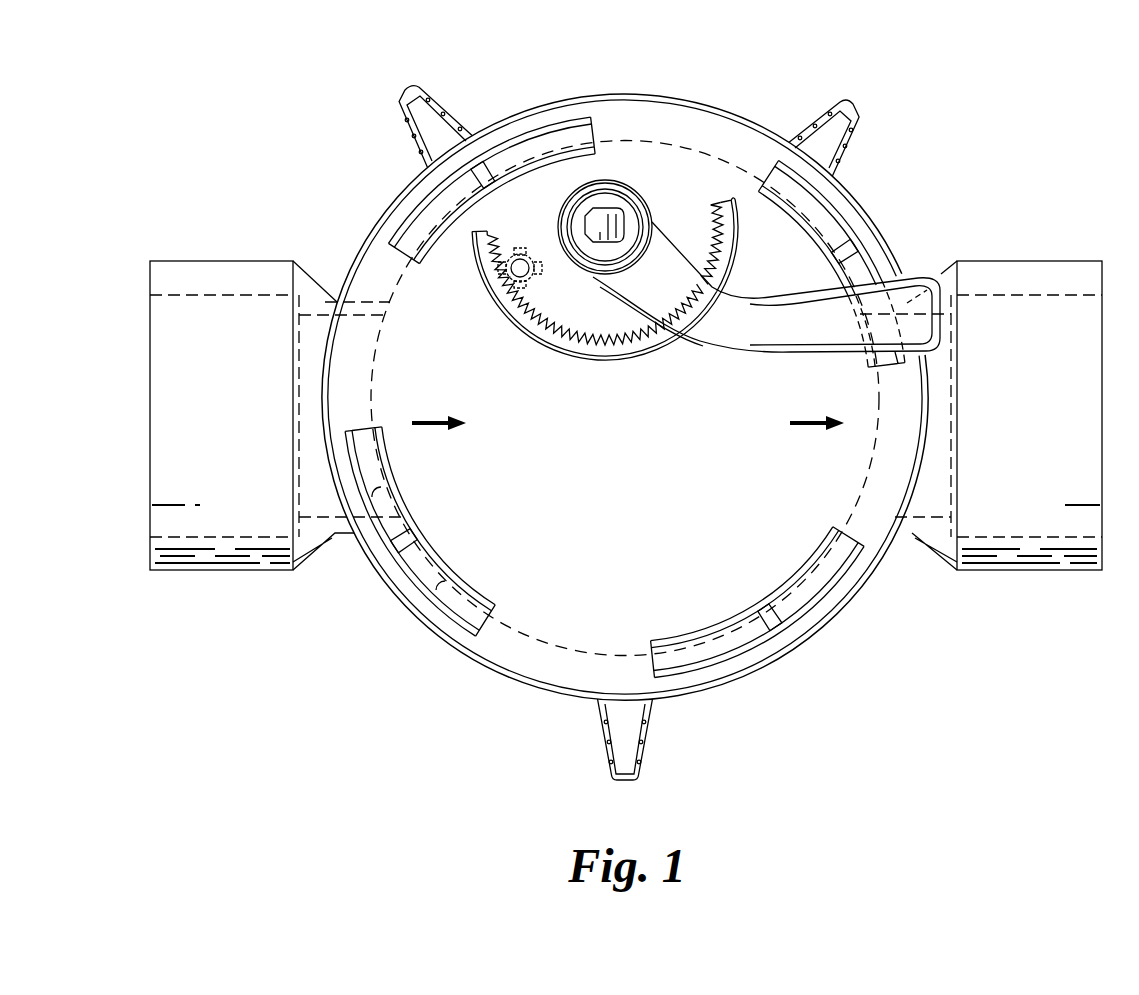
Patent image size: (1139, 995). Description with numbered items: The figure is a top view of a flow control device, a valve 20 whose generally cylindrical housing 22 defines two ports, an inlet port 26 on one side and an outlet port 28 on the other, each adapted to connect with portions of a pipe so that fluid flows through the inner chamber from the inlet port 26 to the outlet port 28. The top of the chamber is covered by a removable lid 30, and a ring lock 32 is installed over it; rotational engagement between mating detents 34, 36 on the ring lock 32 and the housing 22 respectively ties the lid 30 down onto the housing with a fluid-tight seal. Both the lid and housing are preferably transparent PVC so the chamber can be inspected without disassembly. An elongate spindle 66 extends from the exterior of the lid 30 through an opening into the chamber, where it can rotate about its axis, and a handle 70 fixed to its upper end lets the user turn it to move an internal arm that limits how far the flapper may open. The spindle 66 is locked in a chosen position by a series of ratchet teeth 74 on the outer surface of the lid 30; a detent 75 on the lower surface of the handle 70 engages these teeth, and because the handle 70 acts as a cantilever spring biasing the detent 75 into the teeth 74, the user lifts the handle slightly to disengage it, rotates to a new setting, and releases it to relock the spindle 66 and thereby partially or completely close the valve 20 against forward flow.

The valve 20 is at (746, 86).
The housing 22 is at (849, 192).
The inlet port 26 is at (214, 262).
The outlet port 28 is at (1020, 262).
The removable lid 30 is at (545, 470).
The ring lock 32 is at (862, 593).
The detent 34 is at (535, 137).
The detent 36 is at (478, 172).
The spindle 66 is at (589, 225).
The handle 70 is at (904, 302).
The ratchet teeth 74 is at (620, 342).
The detent 75 is at (700, 310).